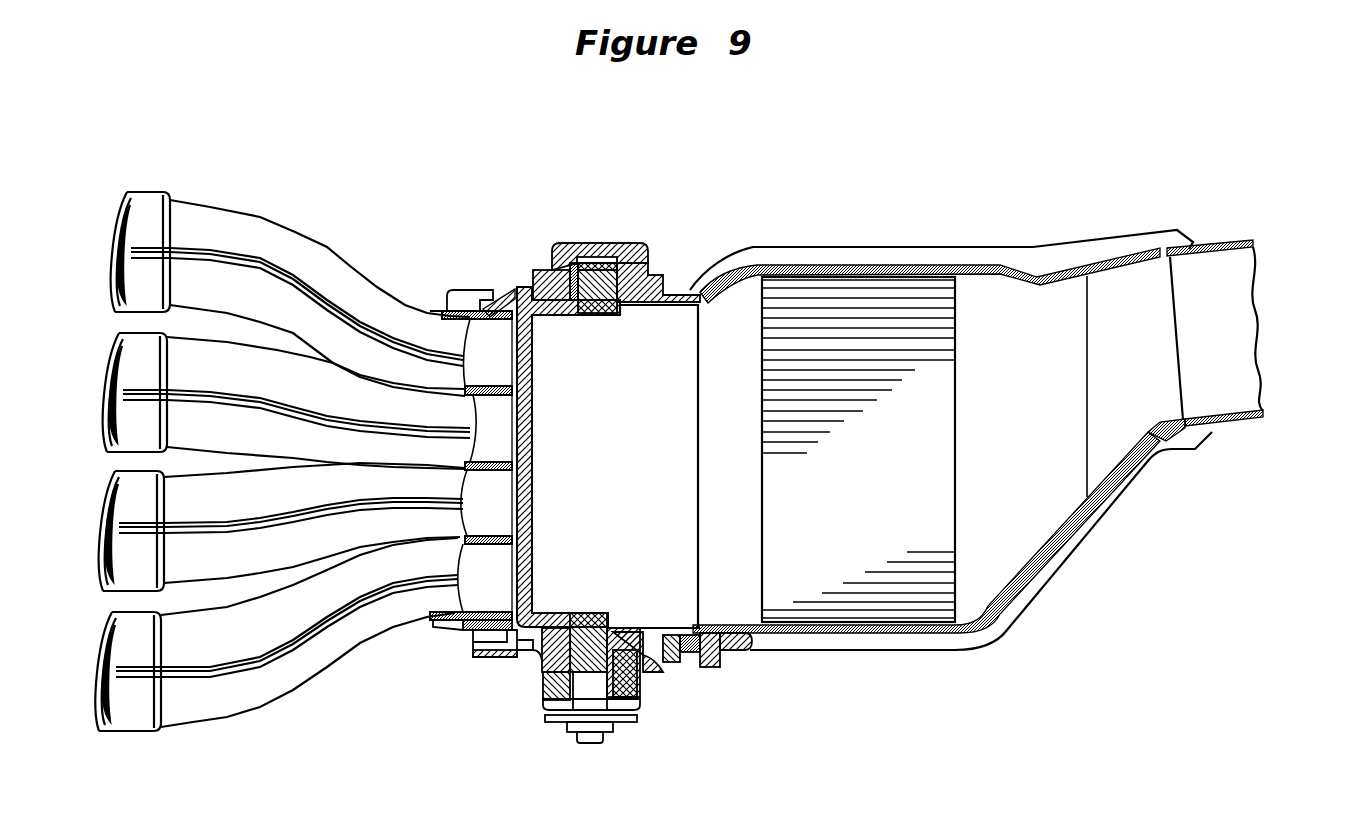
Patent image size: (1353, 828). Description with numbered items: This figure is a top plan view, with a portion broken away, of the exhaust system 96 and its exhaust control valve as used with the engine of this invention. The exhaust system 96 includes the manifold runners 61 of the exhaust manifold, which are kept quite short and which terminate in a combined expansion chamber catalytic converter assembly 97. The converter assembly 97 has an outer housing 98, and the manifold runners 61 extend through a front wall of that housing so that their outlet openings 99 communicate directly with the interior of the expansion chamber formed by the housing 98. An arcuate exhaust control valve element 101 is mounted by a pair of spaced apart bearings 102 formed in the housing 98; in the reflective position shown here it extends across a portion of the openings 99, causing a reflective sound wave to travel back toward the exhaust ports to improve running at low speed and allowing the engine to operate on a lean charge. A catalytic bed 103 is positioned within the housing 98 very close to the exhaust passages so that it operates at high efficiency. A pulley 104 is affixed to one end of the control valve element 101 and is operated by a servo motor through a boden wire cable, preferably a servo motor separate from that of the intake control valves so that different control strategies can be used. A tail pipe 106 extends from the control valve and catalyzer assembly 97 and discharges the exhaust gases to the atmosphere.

The exhaust system 96 is at (391, 150).
The manifold runners 61 is at (398, 297).
The combined expansion chamber catalytic converter assembly 97 is at (497, 279).
The outer housing 98 is at (744, 266).
The outlet openings 99 is at (583, 360).
The arcuate exhaust control valve element 101 is at (531, 462).
The bearings 102 is at (619, 250).
The catalytic bed 103 is at (854, 292).
The pulley 104 is at (543, 718).
The tail pipe 106 is at (1213, 243).